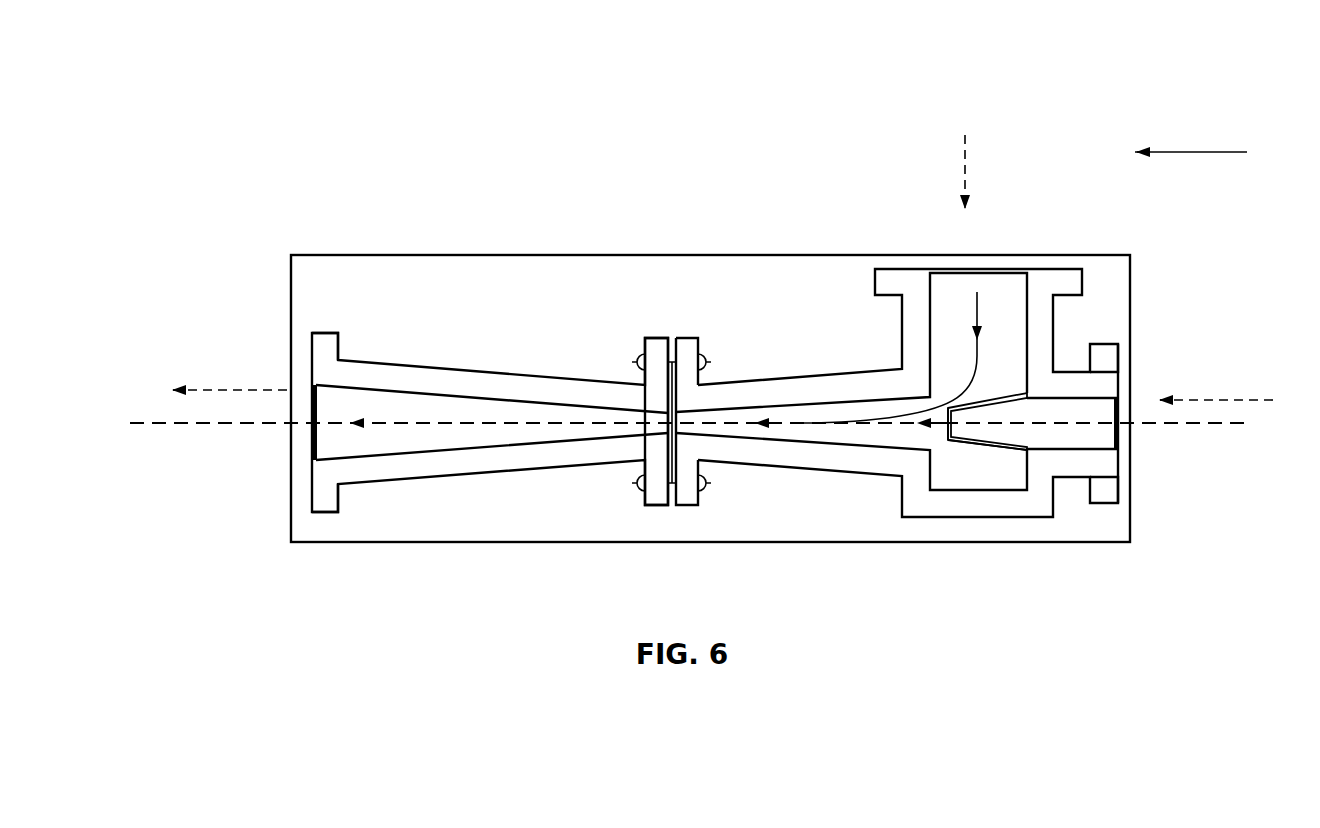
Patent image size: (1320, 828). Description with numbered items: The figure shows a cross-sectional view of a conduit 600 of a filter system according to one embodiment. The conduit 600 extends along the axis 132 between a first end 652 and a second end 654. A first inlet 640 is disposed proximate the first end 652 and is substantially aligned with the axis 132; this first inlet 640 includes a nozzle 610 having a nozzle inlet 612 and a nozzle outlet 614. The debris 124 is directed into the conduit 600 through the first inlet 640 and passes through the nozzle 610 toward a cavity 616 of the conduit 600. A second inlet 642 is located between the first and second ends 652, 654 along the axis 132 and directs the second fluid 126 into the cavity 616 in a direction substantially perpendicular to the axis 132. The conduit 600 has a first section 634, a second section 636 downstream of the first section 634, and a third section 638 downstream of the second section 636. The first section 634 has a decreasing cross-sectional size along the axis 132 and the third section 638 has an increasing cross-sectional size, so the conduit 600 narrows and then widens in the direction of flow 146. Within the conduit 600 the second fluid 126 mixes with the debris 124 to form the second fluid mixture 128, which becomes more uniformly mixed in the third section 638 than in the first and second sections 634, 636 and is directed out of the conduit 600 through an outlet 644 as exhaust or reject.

The conduit 600 is at (240, 116).
The second fluid 126 is at (966, 137).
The direction of flow 146 is at (1202, 150).
The third section 638 is at (428, 350).
The second section 636 is at (660, 248).
The second inlet 642 is at (903, 250).
The first section 634 is at (700, 248).
The second end 654 is at (302, 345).
The second fluid mixture 128 is at (229, 390).
The outlet 644 is at (304, 445).
The first end 652 is at (1133, 332).
The debris 124 is at (1215, 398).
The axis 132 is at (1224, 435).
The first inlet 640 is at (1125, 451).
The cavity 616 is at (895, 433).
The nozzle outlet 614 is at (945, 451).
The nozzle 610 is at (982, 461).
The nozzle inlet 612 is at (1113, 433).